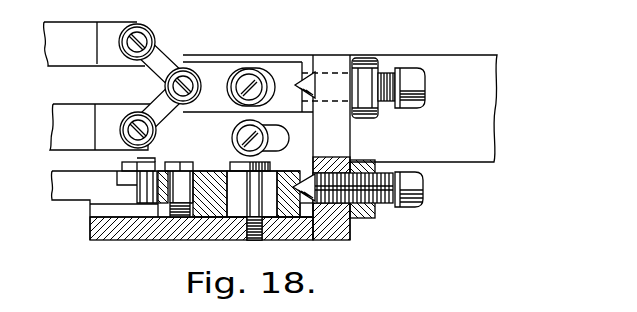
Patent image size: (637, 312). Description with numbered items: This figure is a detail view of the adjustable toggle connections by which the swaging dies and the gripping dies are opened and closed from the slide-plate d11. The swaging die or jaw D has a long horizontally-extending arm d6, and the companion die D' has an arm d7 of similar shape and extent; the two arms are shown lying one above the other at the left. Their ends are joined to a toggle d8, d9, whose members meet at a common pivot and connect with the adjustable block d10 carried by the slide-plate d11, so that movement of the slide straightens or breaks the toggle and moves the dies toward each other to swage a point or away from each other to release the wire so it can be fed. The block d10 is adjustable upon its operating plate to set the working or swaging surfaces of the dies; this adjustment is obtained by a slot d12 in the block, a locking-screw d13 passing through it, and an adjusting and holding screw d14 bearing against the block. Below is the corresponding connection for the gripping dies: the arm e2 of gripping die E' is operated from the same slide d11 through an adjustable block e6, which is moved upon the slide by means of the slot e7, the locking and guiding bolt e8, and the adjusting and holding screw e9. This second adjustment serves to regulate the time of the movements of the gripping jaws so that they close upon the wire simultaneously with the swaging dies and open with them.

The arm d6 is at (94, 44).
The arm d7 is at (101, 127).
The toggle d8 is at (163, 52).
The toggle d9 is at (160, 117).
The adjustable block d10 is at (218, 70).
The slide-plate d11 is at (405, 108).
The slot d12 is at (272, 80).
The locking-screw d13 is at (250, 78).
The adjusting and holding screw d14 is at (408, 78).
The arm e2 is at (175, 205).
The adjustable block e6 is at (213, 172).
The slot e7 is at (268, 176).
The locking and guiding bolt e8 is at (252, 201).
The adjusting and holding screw e9 is at (378, 206).